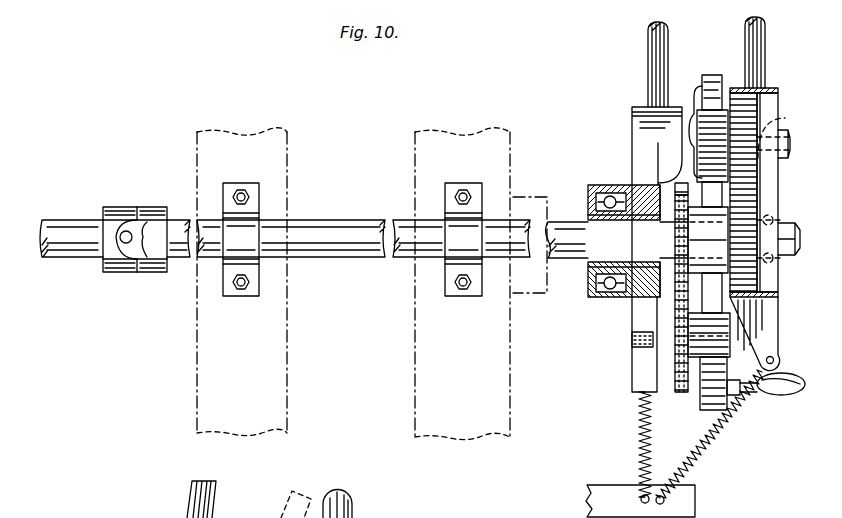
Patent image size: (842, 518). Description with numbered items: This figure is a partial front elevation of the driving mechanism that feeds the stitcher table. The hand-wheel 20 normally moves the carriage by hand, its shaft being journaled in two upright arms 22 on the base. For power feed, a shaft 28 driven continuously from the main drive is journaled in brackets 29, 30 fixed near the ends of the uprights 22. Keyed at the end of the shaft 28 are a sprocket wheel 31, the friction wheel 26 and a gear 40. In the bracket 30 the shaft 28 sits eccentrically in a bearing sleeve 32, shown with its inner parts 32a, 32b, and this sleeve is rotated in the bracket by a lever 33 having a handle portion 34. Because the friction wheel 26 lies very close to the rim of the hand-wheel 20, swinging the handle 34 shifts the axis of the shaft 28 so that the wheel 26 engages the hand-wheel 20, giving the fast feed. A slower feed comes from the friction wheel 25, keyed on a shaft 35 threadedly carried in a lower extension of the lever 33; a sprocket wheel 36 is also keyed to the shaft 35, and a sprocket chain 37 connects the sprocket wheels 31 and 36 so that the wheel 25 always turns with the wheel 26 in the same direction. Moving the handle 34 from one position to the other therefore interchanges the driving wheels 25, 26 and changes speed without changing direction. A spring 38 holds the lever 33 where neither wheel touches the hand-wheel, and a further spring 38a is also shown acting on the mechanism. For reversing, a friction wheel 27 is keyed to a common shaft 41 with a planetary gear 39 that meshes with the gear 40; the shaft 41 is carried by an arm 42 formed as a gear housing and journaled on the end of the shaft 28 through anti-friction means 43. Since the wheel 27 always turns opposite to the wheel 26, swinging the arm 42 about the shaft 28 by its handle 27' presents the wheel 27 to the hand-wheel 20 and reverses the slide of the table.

The hand-wheel 20 is at (708, 75).
The upright arms 22 is at (290, 140).
The friction-drive wheel 25 is at (708, 336).
The friction wheel 26 is at (715, 232).
The reversing friction wheel 27 is at (687, 129).
The handle 27' is at (539, 267).
The shaft 28 is at (340, 227).
The bracket 29 is at (250, 222).
The bracket 30 is at (458, 228).
The sprocket wheel 31 is at (676, 193).
The bearing sleeve 32 is at (590, 278).
The ball bearing 32a is at (594, 186).
The bearing race 32b is at (590, 200).
The lever 33 is at (637, 150).
The handle portion 34 is at (669, 57).
The shaft 35 is at (632, 338).
The sprocket wheel 36 is at (680, 393).
The sprocket chain 37 is at (672, 300).
The spring 38 is at (640, 437).
The return spring 38a is at (705, 455).
The planetary gear 39 is at (766, 88).
The gear 40 is at (757, 197).
The shaft 41 is at (779, 101).
The arm 42 is at (784, 126).
The anti-friction means 43 is at (776, 270).